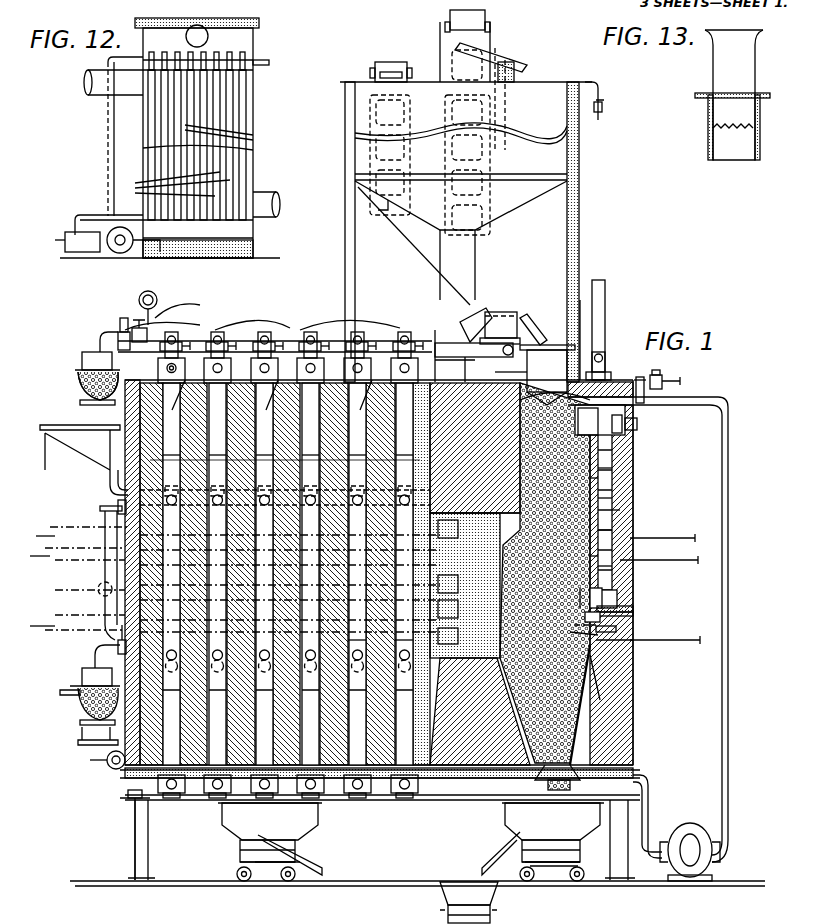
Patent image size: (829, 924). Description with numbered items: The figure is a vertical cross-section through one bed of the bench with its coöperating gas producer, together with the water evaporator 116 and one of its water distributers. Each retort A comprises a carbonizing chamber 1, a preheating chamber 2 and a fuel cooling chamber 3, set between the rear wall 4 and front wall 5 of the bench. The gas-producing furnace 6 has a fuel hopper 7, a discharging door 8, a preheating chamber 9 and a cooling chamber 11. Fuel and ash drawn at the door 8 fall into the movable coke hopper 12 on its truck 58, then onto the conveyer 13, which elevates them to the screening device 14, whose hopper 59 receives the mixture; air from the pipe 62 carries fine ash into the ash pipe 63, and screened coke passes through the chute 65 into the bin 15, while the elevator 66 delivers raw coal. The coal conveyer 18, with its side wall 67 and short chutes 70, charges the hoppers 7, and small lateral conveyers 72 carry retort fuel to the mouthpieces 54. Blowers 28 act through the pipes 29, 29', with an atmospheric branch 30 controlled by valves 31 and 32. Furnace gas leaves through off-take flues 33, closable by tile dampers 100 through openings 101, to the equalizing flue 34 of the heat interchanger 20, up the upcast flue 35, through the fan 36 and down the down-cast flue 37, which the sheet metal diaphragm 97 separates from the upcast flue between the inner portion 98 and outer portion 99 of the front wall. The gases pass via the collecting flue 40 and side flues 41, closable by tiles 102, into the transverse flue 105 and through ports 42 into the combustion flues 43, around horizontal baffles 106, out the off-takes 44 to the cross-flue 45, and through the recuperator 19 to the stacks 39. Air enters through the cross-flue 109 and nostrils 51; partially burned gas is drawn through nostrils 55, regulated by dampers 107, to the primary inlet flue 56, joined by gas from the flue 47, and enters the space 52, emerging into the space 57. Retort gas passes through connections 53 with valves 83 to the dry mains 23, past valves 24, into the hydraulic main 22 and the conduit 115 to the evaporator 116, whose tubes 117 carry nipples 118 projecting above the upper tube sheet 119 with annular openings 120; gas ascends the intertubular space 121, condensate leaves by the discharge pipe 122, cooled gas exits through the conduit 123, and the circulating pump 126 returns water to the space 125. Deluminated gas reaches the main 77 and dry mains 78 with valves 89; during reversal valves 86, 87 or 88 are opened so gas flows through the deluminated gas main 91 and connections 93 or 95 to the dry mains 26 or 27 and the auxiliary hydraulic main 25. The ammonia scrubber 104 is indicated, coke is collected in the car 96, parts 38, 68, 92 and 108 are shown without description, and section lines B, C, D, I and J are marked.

In FIG. 1, the carbonizing chamber 1 is at (370, 572).
In FIG. 1, the preheating chamber 2 is at (288, 548).
In FIG. 1, the fuel cooling chamber 3 is at (288, 699).
In FIG. 1, the rear wall 4 is at (114, 590).
In FIG. 1, the front wall 5 is at (632, 672).
In FIG. 1, the gas-producing furnace 6 is at (620, 680).
In FIG. 1, the fuel hopper 7 is at (550, 352).
In FIG. 1, the discharging door 8 is at (560, 790).
In FIG. 1, the preheating chamber 9 is at (520, 410).
In FIG. 1, the cooling chamber 11 is at (605, 728).
In FIG. 1, the movable coke hopper 12 is at (518, 814).
In FIG. 1, the conveyer 13 is at (490, 24).
In FIG. 1, the screening device 14 is at (498, 62).
In FIG. 1, the bin 15 is at (466, 232).
In FIG. 1, the coal conveyer 18 is at (508, 312).
In FIG. 1, the air recuperator 19 is at (612, 530).
In FIG. 1, the heat interchanger 20 is at (612, 490).
In FIG. 1, the hydraulic main 22 is at (88, 372).
In FIG. 1, the dry main 23 is at (208, 352).
In FIG. 1, the valve 24 is at (118, 332).
In FIG. 1, the auxiliary hydraulic main 25 is at (92, 690).
In FIG. 1, the dry main 26 is at (108, 492).
In FIG. 1, the dry main 27 is at (95, 660).
In FIG. 1, the blower 28 is at (695, 840).
In FIG. 1, the pipe 29 is at (648, 618).
In FIG. 1, the pipe 29' is at (655, 816).
In FIG. 1, the branch 30 is at (660, 376).
In FIG. 1, the valve 31 is at (638, 377).
In FIG. 1, the valve 32 is at (681, 383).
In FIG. 1, the gas off-take flue 33 is at (620, 614).
In FIG. 1, the equalizing flue 34 is at (618, 600).
In FIG. 1, the upcast flue 35 is at (620, 510).
In FIG. 1, the fan 36 is at (628, 432).
In FIG. 1, the down-cast flue 37 is at (612, 468).
In FIG. 1, the valve 38 is at (607, 358).
In FIG. 1, the stack 39 is at (600, 325).
In FIG. 1, the collecting flue 40 is at (612, 590).
In FIG. 1, the side flue 41 is at (403, 666).
In FIG. 1, the port 42 is at (358, 666).
In FIG. 1, the combustion flue 43 is at (87, 574).
In FIG. 1, the gas off-take 44 is at (290, 526).
In FIG. 1, the cross-flue 45 is at (448, 529).
In FIG. 1, the flue 47 is at (285, 530).
In FIG. 1, the nostril 51 is at (290, 584).
In FIG. 1, the primary current inlet space 52 is at (290, 560).
In FIG. 1, the off-take connection 53 is at (180, 340).
In FIG. 1, the mouthpiece 54 is at (158, 368).
In FIG. 1, the nostril 55 is at (430, 575).
In FIG. 1, the primary inlet flue 56 is at (290, 560).
In FIG. 1, the space 57 is at (618, 628).
In FIG. 1, the truck 58 is at (572, 862).
In FIG. 1, the hopper 59 is at (458, 52).
In FIG. 1, the pipe 62 is at (584, 83).
In FIG. 1, the ash pipe 63 is at (500, 114).
In FIG. 1, the chute 65 is at (514, 78).
In FIG. 1, the elevator 66 is at (388, 62).
In FIG. 1, the side wall of the conveyer 67 is at (518, 334).
In FIG. 1, the chute 68 is at (470, 310).
In FIG. 1, the short chute 70 is at (536, 330).
In FIG. 1, the lateral conveyer 72 is at (470, 357).
In FIG. 1, the main 77 is at (106, 760).
In FIG. 1, the dry main 78 is at (185, 798).
In FIG. 1, the valve 83 is at (200, 347).
In FIG. 1, the valve 86 is at (135, 328).
In FIG. 1, the valve 87 is at (117, 515).
In FIG. 1, the valve 88 is at (119, 639).
In FIG. 1, the valve 89 is at (128, 795).
In FIG. 1, the deluminated gas main 91 is at (156, 302).
In FIG. 1, the pipe 92 is at (157, 318).
In FIG. 1, the connection 93 is at (320, 500).
In FIG. 1, the connection 95 is at (235, 655).
In FIG. 1, the car 96 is at (290, 832).
In FIG. 1, the sheet metal diaphragm 97 is at (590, 556).
In FIG. 1, the inner portion of front wall 98 is at (590, 478).
In FIG. 1, the outer portion of front wall 99 is at (612, 498).
In FIG. 1, the tile damper 100 is at (634, 608).
In FIG. 1, the opening 101 is at (650, 605).
In FIG. 1, the tile 102 is at (658, 640).
In FIG. 1, the ammonia scrubber 104 is at (463, 585).
In FIG. 1, the transverse flue 105 is at (440, 645).
In FIG. 1, the horizontal baffle 106 is at (290, 611).
In FIG. 1, the damper 107 is at (612, 566).
In FIG. 1, the plate 108 is at (628, 632).
In FIG. 1, the cross-flue 109 is at (463, 610).
In FIG. 12, the conduit 115 is at (268, 204).
In FIG. 12, the water evaporator 116 is at (253, 103).
In FIG. 12, the tube 117 is at (214, 137).
In FIG. 12, the nipple 118 is at (170, 58).
In FIG. 13, the nipple 118 is at (734, 95).
In FIG. 12, the upper tube sheet 119 is at (255, 65).
In FIG. 13, the annular discharge opening 120 is at (708, 108).
In FIG. 12, the intertubular space 121 is at (171, 184).
In FIG. 12, the sealed discharge pipe 122 is at (125, 214).
In FIG. 12, the conduit 123 is at (113, 136).
In FIG. 12, the space 125 is at (210, 38).
In FIG. 12, the circulating pump 126 is at (112, 253).
In FIG. 1, the retort A is at (203, 585).
In FIG. 1, the section B is at (665, 633).
In FIG. 1, the section C is at (40, 548).
In FIG. 1, the section D is at (659, 555).
In FIG. 1, the section I is at (45, 527).
In FIG. 1, the section J is at (662, 531).